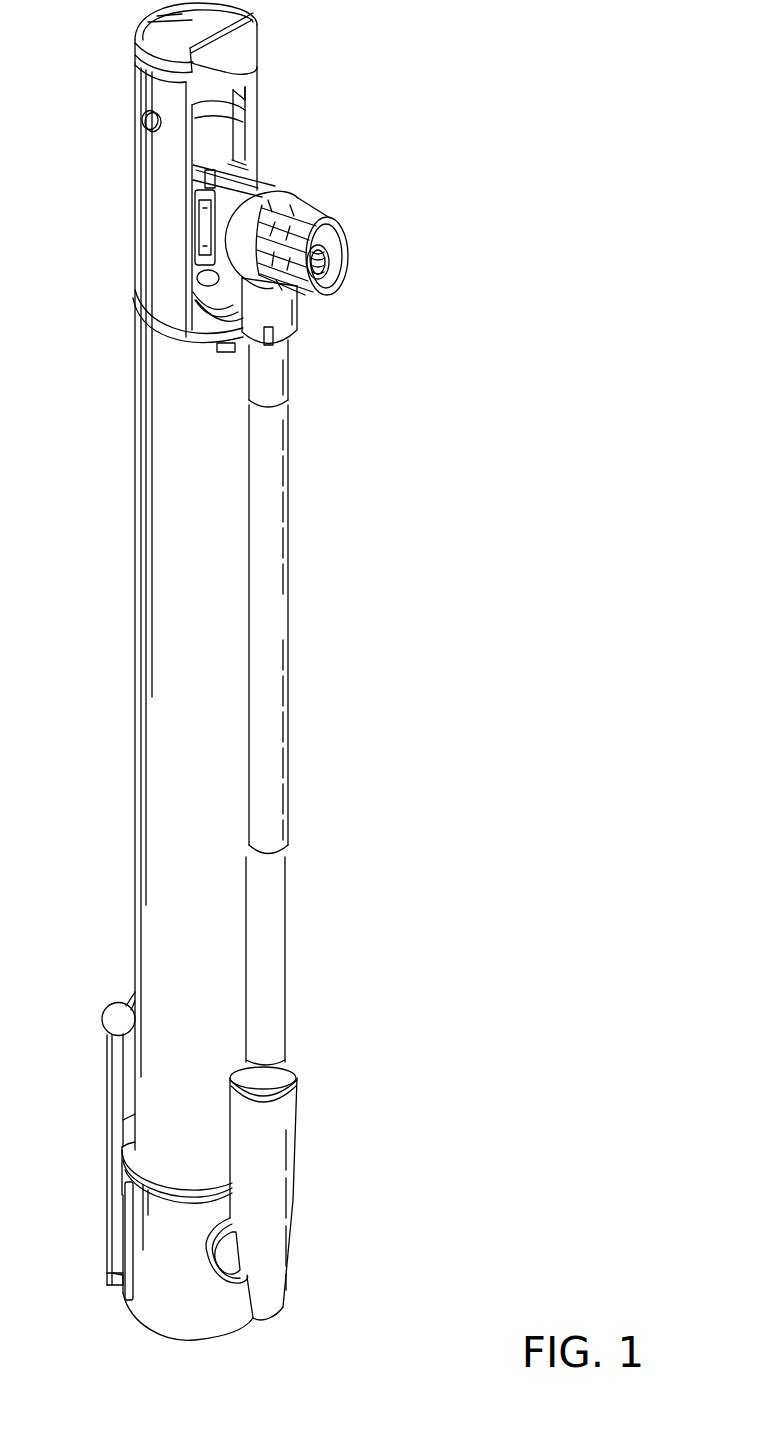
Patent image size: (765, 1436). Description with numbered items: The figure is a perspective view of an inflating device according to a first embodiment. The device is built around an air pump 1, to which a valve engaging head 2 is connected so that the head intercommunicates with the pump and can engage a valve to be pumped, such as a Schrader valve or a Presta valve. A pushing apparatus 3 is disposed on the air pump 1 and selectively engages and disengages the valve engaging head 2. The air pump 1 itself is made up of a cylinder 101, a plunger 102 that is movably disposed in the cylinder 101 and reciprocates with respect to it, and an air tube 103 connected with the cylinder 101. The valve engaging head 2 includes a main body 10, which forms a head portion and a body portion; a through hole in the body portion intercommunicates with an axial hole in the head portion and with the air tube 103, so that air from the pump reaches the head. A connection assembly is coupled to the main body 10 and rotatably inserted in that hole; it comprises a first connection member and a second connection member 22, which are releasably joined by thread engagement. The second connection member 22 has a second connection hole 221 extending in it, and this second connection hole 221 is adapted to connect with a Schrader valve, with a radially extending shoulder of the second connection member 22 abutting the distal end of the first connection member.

The air pump 1 is at (129, 409).
The cylinder 101 is at (178, 446).
The plunger 102 is at (202, 280).
The air tube 103 is at (270, 470).
The valve engaging head 2 is at (307, 189).
The pushing apparatus 3 is at (272, 168).
The main body 10 is at (275, 197).
The second connection member 22 is at (333, 233).
The second connection hole 221 is at (330, 262).